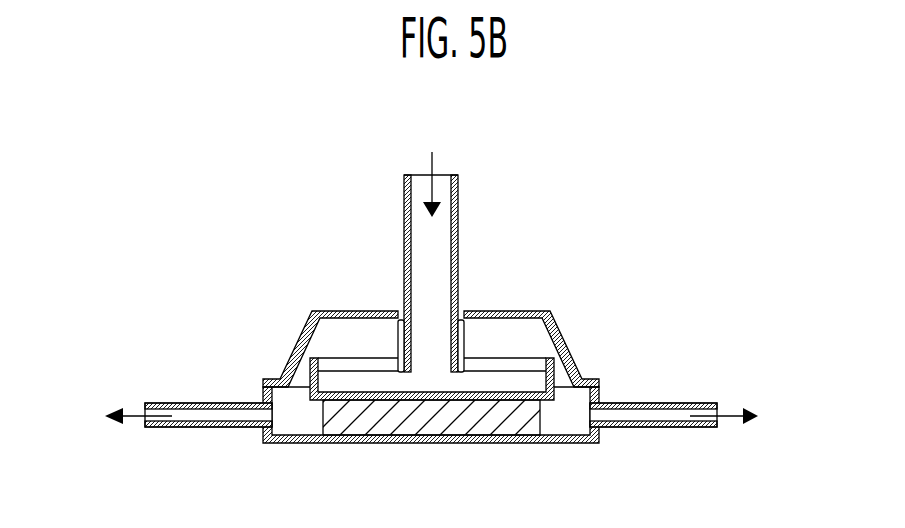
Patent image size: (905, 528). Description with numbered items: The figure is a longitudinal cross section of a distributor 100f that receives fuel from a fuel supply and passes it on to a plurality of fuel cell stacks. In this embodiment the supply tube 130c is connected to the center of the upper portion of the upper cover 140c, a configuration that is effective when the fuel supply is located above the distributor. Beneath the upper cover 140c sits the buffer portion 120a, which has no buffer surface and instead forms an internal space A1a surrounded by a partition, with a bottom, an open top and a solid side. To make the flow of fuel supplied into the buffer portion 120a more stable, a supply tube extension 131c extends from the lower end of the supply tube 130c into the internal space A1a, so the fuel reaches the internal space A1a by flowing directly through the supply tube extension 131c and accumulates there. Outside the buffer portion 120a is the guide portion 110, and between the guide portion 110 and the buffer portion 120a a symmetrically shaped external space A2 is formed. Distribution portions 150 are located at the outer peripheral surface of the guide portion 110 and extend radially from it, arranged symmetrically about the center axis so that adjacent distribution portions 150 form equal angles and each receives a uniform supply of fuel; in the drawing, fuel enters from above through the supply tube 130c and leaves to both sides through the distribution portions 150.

The distributor 100f is at (188, 118).
The guide portion 110 is at (602, 438).
The buffer portion 120a is at (554, 390).
The supply tube 130c is at (404, 202).
The supply tube extension 131c is at (398, 347).
The upper cover 140c is at (548, 311).
The distribution portion 150 is at (183, 403).
The internal space A1a is at (499, 377).
The external space A2 is at (298, 412).